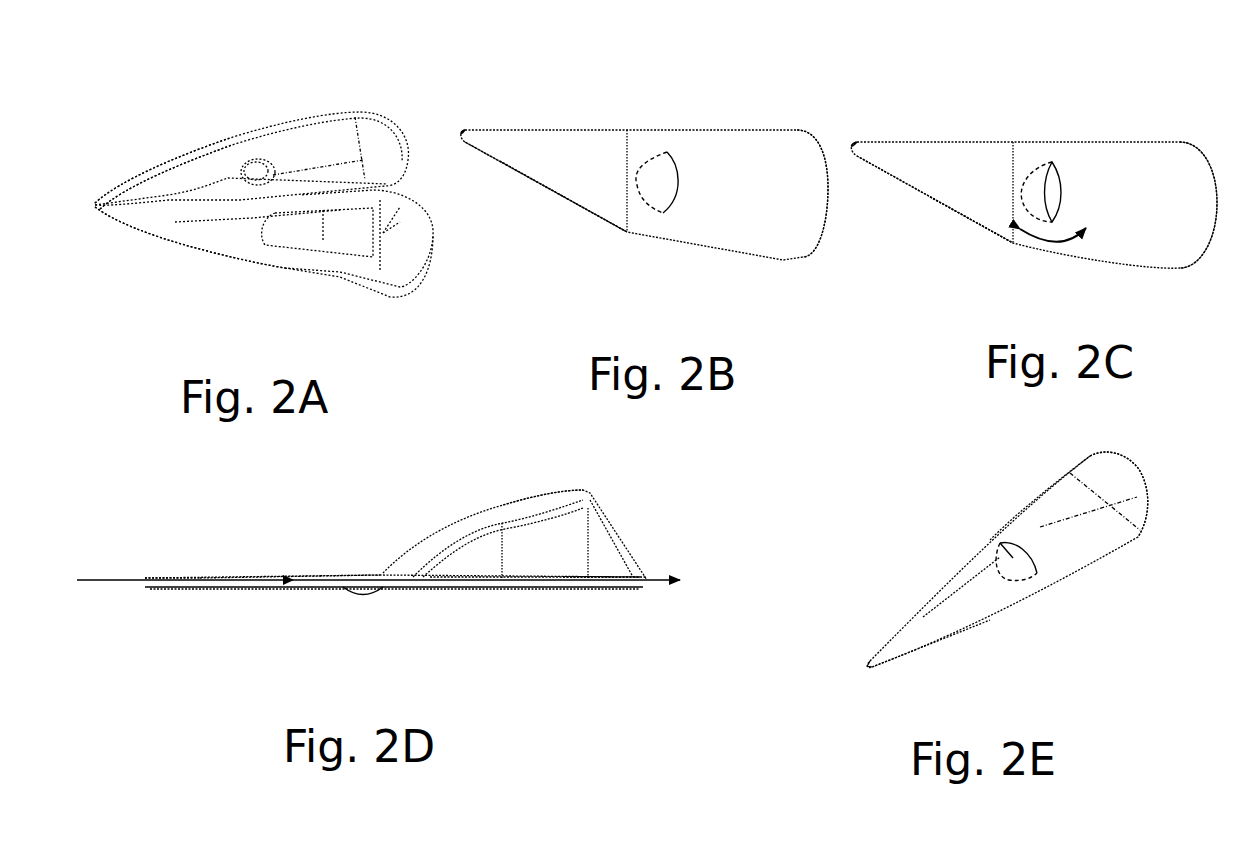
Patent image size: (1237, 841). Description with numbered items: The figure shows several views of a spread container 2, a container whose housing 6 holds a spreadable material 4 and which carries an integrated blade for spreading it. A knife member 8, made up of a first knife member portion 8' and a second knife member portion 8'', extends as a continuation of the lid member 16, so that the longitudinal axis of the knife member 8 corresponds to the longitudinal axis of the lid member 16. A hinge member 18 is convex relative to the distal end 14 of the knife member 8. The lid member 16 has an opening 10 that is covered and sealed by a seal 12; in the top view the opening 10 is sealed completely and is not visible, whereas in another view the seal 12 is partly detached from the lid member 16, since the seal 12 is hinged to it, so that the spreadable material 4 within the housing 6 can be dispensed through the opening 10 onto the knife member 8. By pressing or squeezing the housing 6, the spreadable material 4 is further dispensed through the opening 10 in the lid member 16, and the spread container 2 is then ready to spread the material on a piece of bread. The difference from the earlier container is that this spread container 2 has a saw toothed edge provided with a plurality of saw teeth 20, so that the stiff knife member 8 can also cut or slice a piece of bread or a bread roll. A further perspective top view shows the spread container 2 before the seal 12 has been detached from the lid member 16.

In FIG. 2A, the spread container 2 is at (378, 92).
In FIG. 2B, the spread container 2 is at (636, 115).
In FIG. 2C, the spread container 2 is at (972, 122).
In FIG. 2D, the spread container 2 is at (502, 486).
In FIG. 2E, the spread container 2 is at (923, 552).
In FIG. 2D, the spreadable material 4 is at (355, 600).
In FIG. 2A, the housing 6 is at (343, 283).
In FIG. 2D, the housing 6 is at (527, 500).
In FIG. 2E, the housing 6 is at (1090, 578).
In FIG. 2A, the knife member 8 is at (273, 257).
In FIG. 2B, the knife member 8 is at (546, 189).
In FIG. 2C, the knife member 8 is at (935, 221).
In FIG. 2D, the knife member 8 is at (290, 633).
In FIG. 2E, the knife member 8 is at (945, 656).
In FIG. 2A, the first knife member portion 8' is at (190, 259).
In FIG. 2A, the second knife member portion 8'' is at (166, 141).
In FIG. 2C, the opening 10 is at (1033, 185).
In FIG. 2D, the opening 10 is at (413, 599).
In FIG. 2A, the seal 12 is at (252, 156).
In FIG. 2B, the seal 12 is at (657, 190).
In FIG. 2C, the seal 12 is at (1055, 195).
In FIG. 2D, the seal 12 is at (430, 590).
In FIG. 2E, the seal 12 is at (995, 547).
In FIG. 2B, the distal end 14 is at (485, 145).
In FIG. 2C, the distal end 14 is at (872, 152).
In FIG. 2D, the distal end 14 is at (145, 568).
In FIG. 2E, the distal end 14 is at (885, 653).
In FIG. 2A, the lid member 16 is at (340, 130).
In FIG. 2B, the lid member 16 is at (770, 155).
In FIG. 2C, the lid member 16 is at (1153, 155).
In FIG. 2D, the lid member 16 is at (518, 600).
In FIG. 2E, the lid member 16 is at (1017, 530).
In FIG. 2A, the hinge member 18 is at (275, 165).
In FIG. 2A, the saw teeth 20 is at (110, 190).
In FIG. 2B, the saw teeth 20 is at (565, 210).
In FIG. 2C, the saw teeth 20 is at (975, 230).